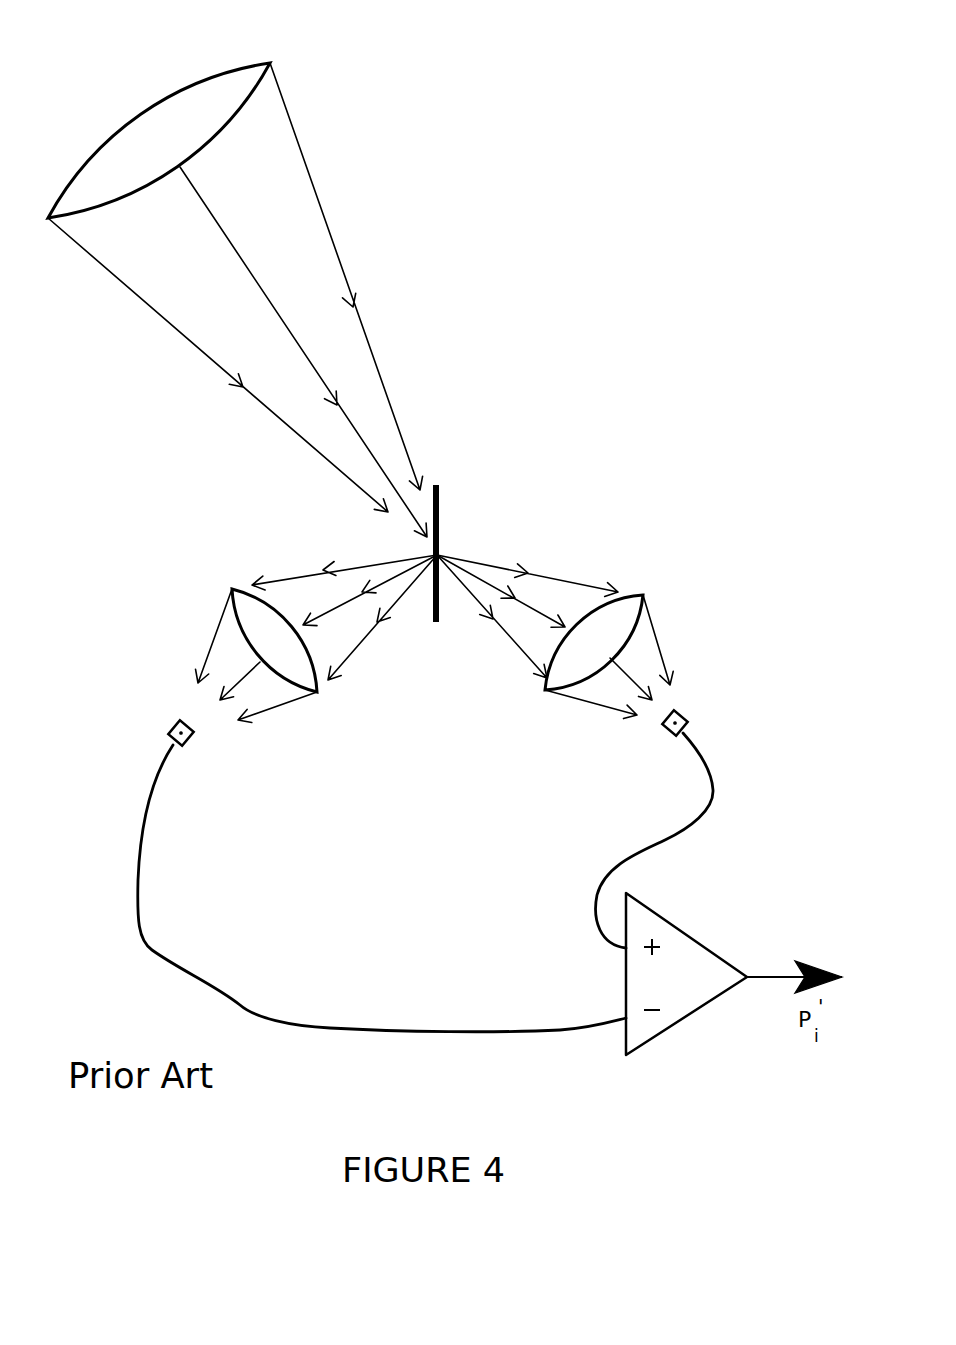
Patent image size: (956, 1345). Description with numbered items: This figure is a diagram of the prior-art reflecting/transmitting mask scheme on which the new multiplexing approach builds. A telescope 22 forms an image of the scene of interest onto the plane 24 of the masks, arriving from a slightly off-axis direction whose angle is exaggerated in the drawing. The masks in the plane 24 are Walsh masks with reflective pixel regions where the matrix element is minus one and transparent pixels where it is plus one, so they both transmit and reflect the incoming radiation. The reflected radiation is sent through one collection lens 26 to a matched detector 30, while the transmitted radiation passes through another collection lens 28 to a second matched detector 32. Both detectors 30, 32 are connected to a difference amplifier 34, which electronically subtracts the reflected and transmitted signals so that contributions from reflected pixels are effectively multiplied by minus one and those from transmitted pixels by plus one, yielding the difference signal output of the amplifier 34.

The telescope 22 is at (270, 63).
The plane of the masks 24 is at (443, 515).
The collection lens 26 is at (232, 589).
The collection lens 28 is at (643, 595).
The detector 30 is at (192, 748).
The detector 32 is at (690, 713).
The difference amplifier 34 is at (687, 927).